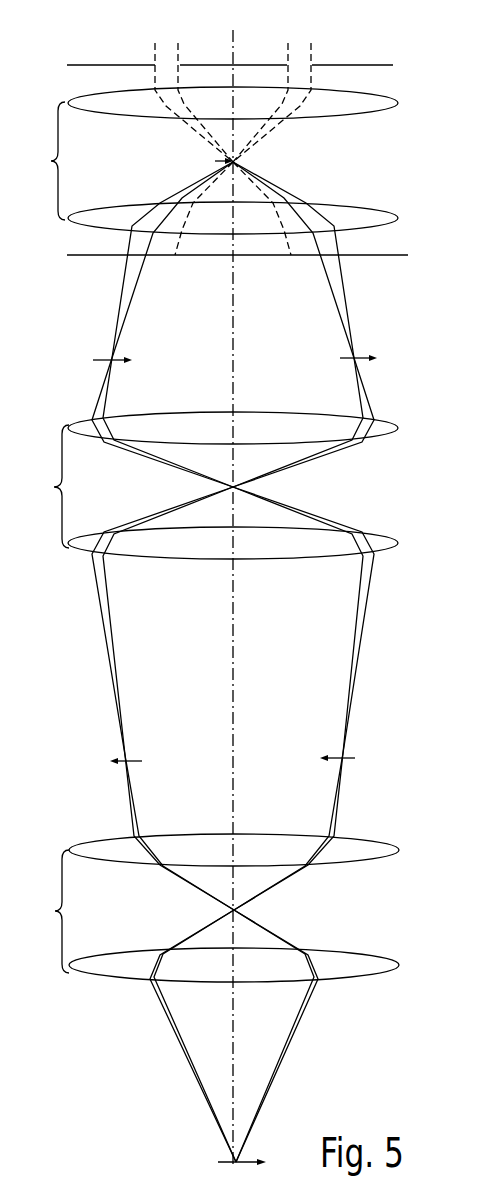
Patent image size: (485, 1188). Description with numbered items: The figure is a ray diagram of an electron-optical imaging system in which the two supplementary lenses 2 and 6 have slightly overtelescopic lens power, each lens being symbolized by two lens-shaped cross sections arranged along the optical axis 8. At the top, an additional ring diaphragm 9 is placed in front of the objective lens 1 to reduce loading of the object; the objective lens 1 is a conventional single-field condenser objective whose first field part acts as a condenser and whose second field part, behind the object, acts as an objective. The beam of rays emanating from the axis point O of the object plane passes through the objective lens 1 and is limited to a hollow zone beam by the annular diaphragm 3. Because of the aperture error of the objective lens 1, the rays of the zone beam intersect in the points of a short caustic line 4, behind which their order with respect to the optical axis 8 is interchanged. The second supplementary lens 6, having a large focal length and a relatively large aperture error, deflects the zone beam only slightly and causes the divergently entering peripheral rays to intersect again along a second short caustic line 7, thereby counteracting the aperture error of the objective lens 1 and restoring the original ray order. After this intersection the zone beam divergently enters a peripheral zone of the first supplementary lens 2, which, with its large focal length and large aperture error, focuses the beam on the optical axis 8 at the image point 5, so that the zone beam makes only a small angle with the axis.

The objective lens 1 is at (213, 160).
The first supplementary lens 2 is at (213, 908).
The annular diaphragm 3 is at (397, 251).
The caustic line 4 is at (235, 361).
The focal point / specimen plane 5 is at (241, 1160).
The second supplementary lens 6 is at (215, 485).
The second caustic line 7 is at (232, 759).
The optical axis 8 is at (233, 670).
The ring diaphragm 9 is at (383, 62).
The axis point of the object plane O is at (244, 158).